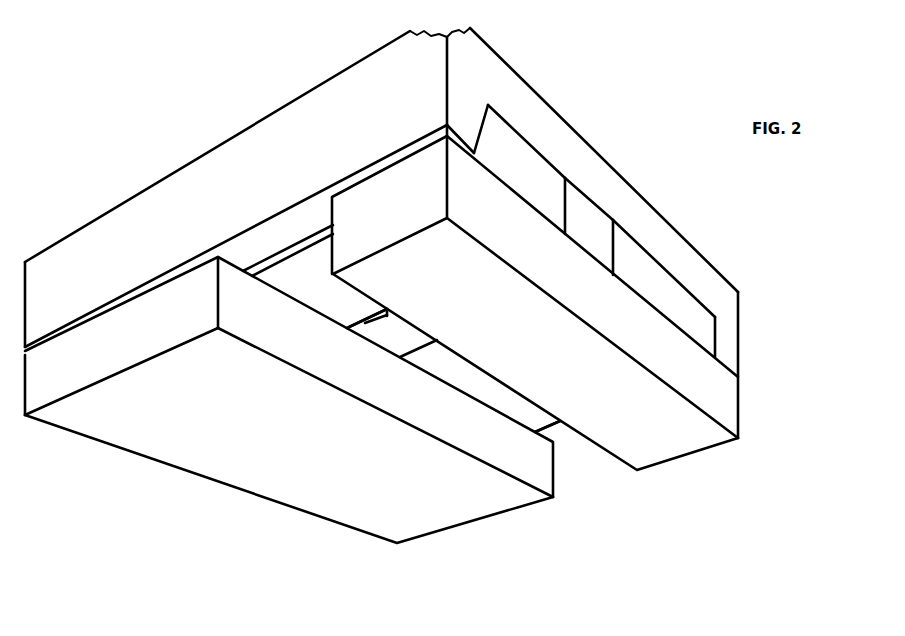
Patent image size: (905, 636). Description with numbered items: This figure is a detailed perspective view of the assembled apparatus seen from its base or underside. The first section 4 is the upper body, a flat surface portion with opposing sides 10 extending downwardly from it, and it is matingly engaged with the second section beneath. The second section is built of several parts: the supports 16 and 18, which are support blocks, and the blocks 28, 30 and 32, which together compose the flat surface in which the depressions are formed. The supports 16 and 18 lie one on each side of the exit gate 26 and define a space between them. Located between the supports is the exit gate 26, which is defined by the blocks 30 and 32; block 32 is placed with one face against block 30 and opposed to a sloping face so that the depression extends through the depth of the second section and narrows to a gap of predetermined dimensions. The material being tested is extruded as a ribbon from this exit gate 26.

The first section 4 is at (381, 202).
The opposing sides 10 is at (728, 337).
The support 16 is at (689, 435).
The support 18 is at (465, 495).
The exit gate 26 is at (373, 322).
The block 28 is at (657, 287).
The block 30 is at (592, 223).
The block 32 is at (515, 160).